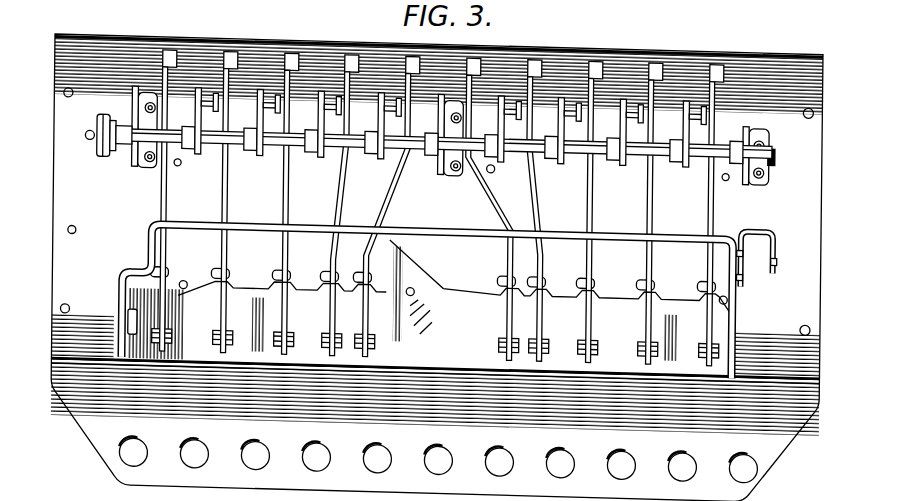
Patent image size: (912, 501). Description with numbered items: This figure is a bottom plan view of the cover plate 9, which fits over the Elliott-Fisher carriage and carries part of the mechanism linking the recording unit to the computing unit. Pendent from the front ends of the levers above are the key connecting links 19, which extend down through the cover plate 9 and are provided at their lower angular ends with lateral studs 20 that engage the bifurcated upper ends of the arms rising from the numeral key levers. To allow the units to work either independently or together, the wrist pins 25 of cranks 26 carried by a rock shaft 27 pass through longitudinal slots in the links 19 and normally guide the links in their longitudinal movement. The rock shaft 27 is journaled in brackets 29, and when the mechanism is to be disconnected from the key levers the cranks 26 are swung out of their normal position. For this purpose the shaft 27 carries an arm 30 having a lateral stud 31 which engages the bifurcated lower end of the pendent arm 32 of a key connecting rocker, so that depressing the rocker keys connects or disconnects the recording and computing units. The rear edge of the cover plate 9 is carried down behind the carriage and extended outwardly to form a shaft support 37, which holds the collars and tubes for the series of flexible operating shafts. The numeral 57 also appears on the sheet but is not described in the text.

The cover plate 9 is at (436, 267).
The key connecting links 19 is at (449, 128).
The lateral studs 20 is at (213, 52).
The wrist pins 25 is at (160, 109).
The cranks 26 is at (199, 110).
The rock shaft 27 is at (604, 169).
The brackets 29 is at (459, 154).
The arm 30 is at (106, 120).
The lateral stud 31 is at (86, 133).
The pendent arm 32 is at (59, 116).
The shaft support 37 is at (438, 448).
The adjacent figure numeral 57 is at (751, 15).